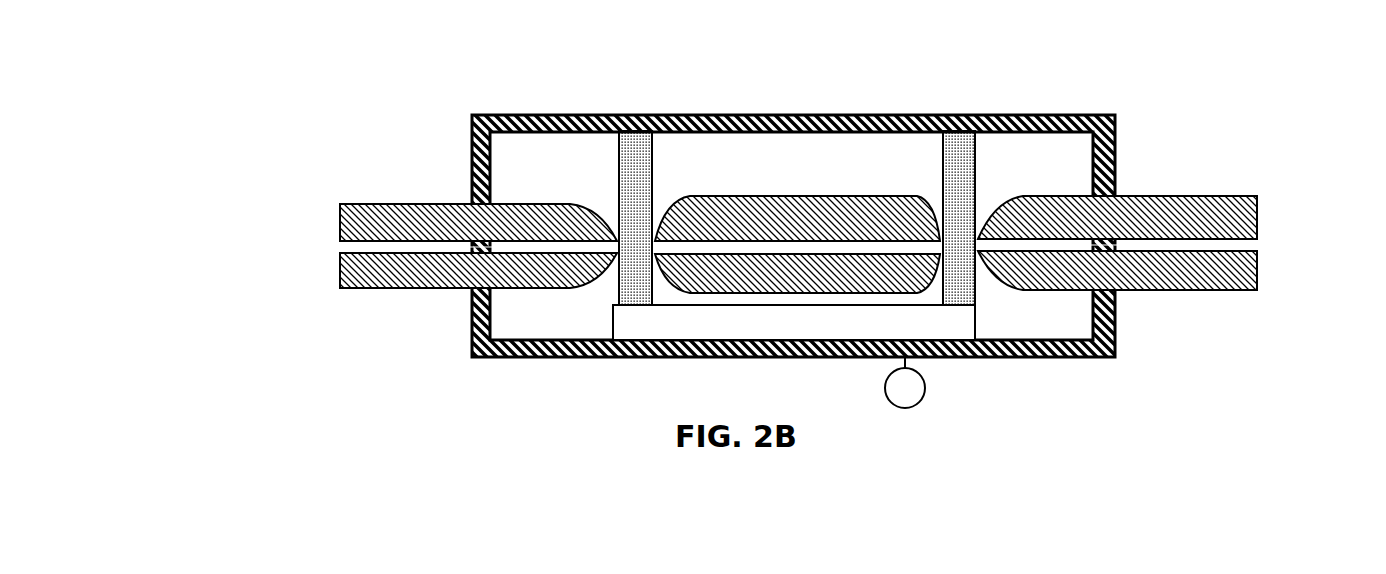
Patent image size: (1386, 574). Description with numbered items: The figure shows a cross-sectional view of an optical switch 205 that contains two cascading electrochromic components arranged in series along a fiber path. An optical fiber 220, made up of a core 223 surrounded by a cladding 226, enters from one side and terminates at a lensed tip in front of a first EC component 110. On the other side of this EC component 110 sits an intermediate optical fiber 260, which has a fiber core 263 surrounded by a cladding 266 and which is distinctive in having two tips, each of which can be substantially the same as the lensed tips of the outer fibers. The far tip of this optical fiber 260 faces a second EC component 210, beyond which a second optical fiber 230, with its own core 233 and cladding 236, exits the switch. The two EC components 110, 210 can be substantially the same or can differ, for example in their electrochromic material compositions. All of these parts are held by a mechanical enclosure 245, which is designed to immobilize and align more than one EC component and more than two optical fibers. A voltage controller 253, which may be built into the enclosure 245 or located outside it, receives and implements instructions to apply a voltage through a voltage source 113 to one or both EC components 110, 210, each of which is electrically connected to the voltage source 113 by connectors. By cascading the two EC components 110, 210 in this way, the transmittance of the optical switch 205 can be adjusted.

The optical switch 205 is at (265, 54).
The optical fiber 220 is at (444, 237).
The core 223 is at (340, 247).
The cladding 226 is at (437, 270).
The EC component 110 is at (632, 223).
The cladding 266 is at (697, 247).
The fiber core 263 is at (717, 222).
The optical fiber 260 is at (797, 218).
The EC component 210 is at (967, 223).
The mechanical enclosure 245 is at (1010, 115).
The optical fiber 230 is at (1157, 230).
The core 233 is at (1255, 240).
The cladding 236 is at (1172, 275).
The voltage controller 253 is at (794, 322).
The voltage source 113 is at (917, 407).